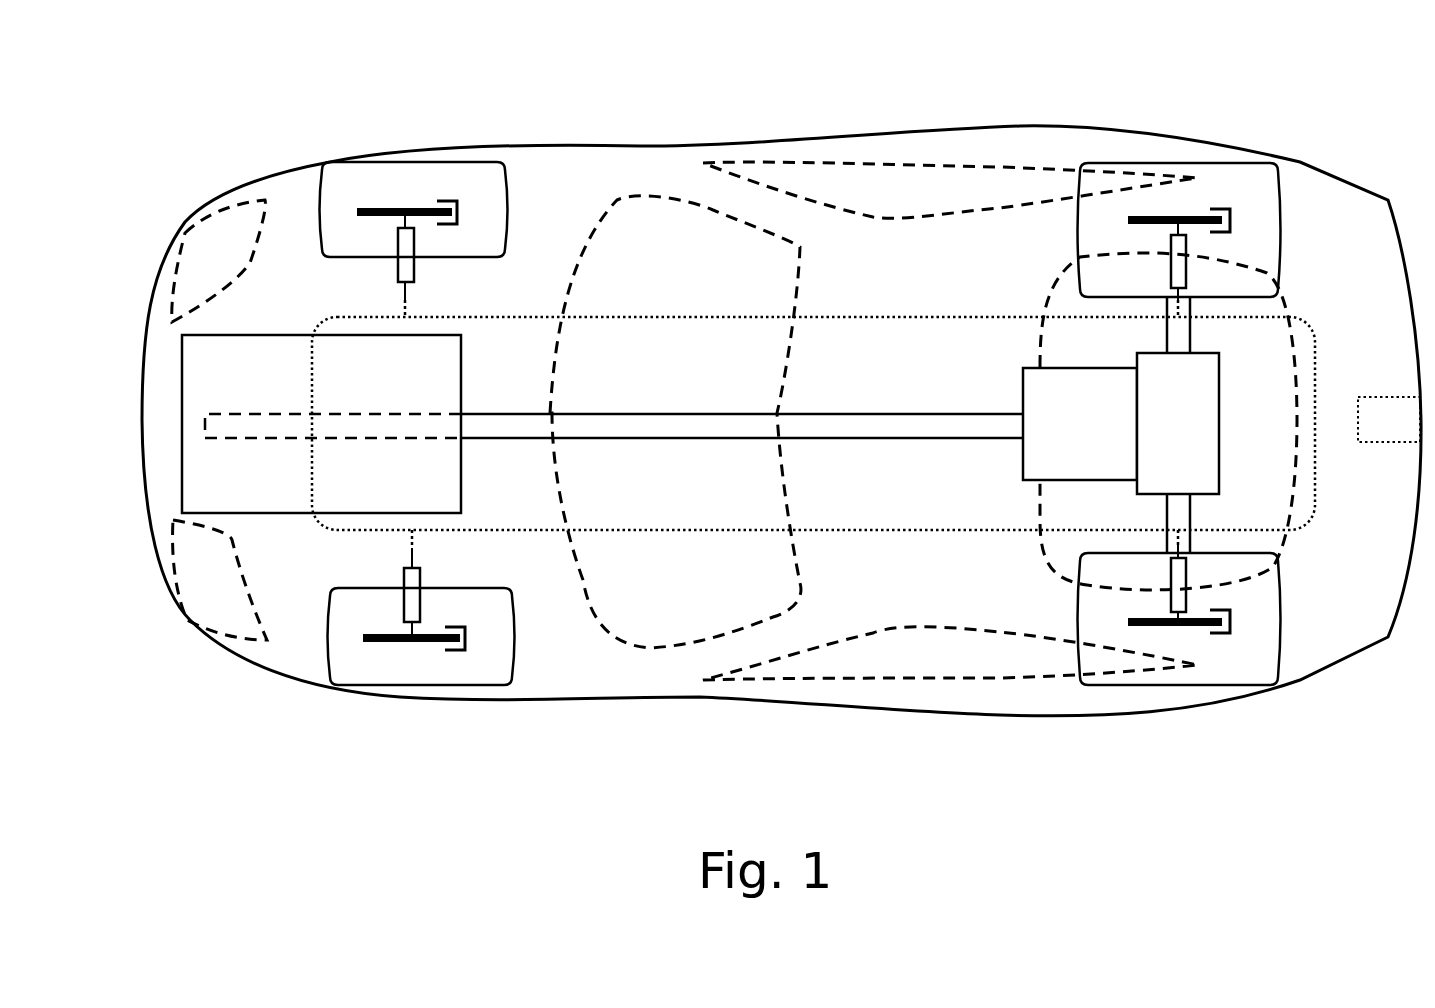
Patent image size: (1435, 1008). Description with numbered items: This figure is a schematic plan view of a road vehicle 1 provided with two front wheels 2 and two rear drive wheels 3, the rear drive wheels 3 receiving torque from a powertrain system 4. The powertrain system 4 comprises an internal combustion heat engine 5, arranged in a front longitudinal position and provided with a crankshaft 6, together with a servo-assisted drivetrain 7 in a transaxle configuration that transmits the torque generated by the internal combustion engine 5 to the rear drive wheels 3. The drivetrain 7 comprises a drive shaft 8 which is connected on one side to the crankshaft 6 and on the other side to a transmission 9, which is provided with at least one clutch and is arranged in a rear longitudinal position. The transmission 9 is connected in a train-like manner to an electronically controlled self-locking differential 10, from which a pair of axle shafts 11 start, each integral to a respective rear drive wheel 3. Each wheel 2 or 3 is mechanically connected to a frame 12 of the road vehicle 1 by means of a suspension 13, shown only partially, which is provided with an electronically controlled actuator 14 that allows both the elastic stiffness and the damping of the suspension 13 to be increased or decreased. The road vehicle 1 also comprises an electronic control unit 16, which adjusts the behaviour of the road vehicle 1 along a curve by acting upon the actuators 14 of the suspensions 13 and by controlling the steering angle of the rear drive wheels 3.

The road vehicle 1 is at (1302, 818).
The front wheels 2 is at (405, 182).
The rear drive wheels 3 is at (1262, 180).
The powertrain system 4 is at (232, 168).
The internal combustion heat engine 5 is at (190, 365).
The crankshaft 6 is at (310, 420).
The servo-assisted drivetrain 7 is at (816, 108).
The drive shaft 8 is at (810, 432).
The transmission 9 is at (1080, 424).
The electronically controlled self-locking differential 10 is at (1178, 423).
The axle shafts 11 is at (1175, 338).
The frame 12 is at (893, 533).
The suspension 13 is at (458, 238).
The electronically controlled actuator 14 is at (407, 265).
The electronic control unit 16 is at (1389, 419).